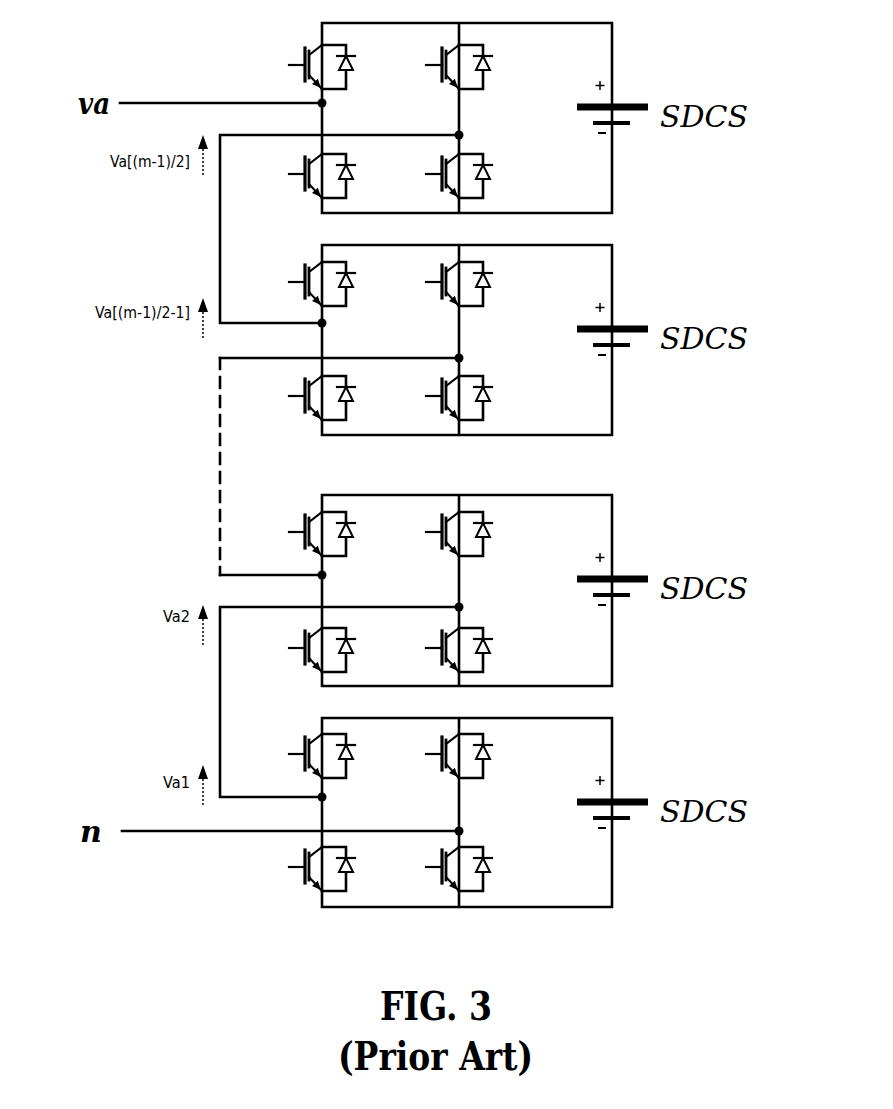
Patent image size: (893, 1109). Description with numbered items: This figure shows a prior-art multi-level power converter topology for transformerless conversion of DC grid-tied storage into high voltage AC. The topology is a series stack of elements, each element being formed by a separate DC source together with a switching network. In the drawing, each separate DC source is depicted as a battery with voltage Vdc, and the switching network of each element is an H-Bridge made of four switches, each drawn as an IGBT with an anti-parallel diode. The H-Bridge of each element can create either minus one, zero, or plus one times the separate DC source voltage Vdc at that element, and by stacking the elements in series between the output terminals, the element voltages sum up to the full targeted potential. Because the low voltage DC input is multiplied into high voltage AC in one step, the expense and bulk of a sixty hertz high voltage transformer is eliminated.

The separate DC source (SDCS) voltage Vdc is at (594, 456).